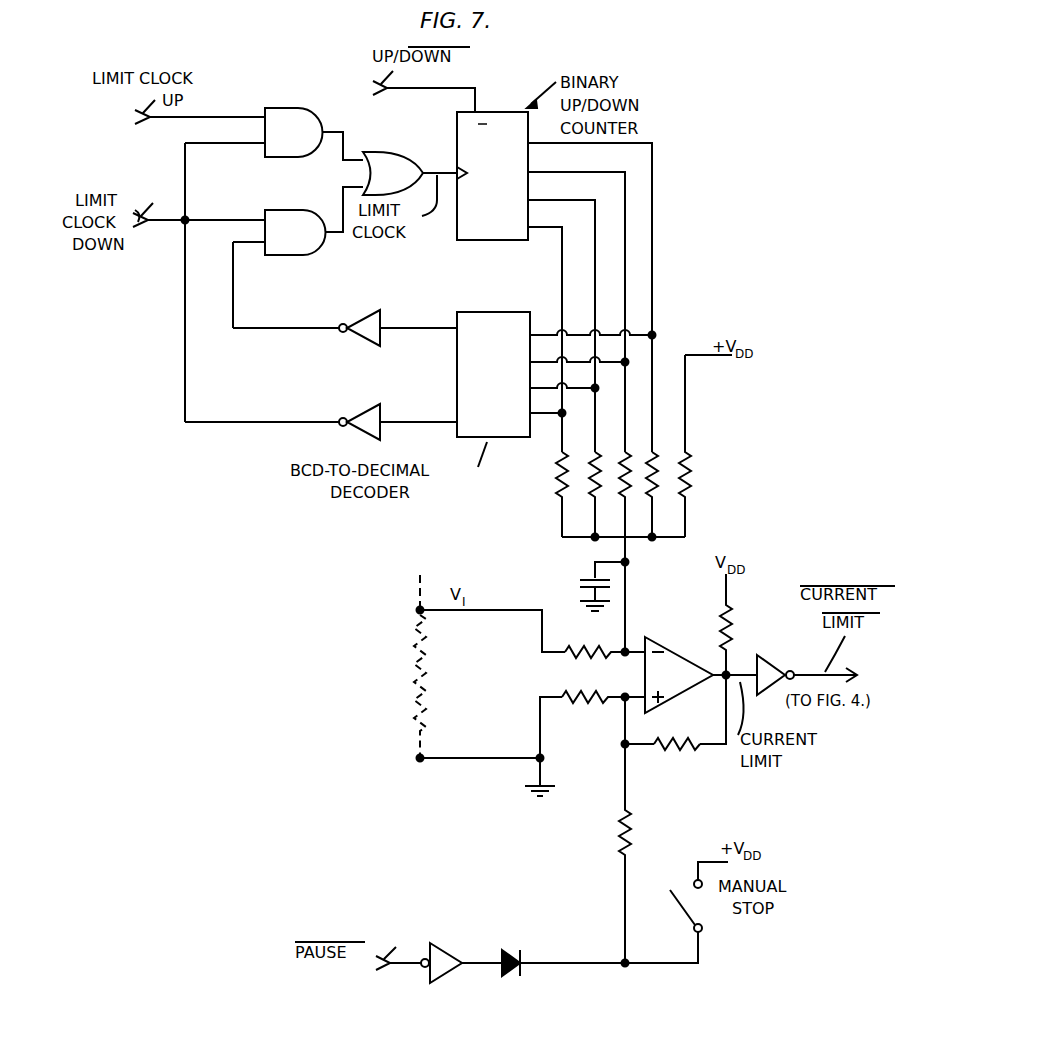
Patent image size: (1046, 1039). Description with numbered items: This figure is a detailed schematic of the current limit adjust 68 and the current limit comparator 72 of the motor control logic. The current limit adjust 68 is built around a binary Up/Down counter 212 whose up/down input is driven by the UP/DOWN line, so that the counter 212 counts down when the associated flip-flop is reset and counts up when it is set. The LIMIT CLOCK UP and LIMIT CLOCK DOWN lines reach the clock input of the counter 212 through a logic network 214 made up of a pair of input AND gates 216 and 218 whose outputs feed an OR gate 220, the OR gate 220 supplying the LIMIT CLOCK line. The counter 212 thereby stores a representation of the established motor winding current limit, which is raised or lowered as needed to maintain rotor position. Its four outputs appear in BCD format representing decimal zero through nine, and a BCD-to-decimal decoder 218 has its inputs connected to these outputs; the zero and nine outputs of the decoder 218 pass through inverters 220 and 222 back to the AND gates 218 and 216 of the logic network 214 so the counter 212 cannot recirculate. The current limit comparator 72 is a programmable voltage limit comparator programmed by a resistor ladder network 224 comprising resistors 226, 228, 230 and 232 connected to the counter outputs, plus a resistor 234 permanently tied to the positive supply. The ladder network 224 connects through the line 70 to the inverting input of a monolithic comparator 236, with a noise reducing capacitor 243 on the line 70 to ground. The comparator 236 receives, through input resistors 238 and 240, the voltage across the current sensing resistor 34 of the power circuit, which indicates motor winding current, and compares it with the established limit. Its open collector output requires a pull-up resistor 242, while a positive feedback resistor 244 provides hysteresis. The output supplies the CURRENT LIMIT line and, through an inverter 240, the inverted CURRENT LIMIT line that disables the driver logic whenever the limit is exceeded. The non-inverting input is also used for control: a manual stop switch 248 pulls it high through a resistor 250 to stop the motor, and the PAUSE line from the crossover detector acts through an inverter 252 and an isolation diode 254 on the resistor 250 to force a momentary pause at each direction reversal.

The logic network 214 is at (357, 242).
The input AND gate 216 is at (310, 110).
The input AND gate / BCD-to-decimal decoder 218 is at (310, 212).
The OR gate / inverter 220 is at (408, 152).
The inverter 222 is at (367, 406).
The binary Up/Down counter 212 is at (507, 111).
The current limit adjust 68 is at (628, 46).
The resistor ladder network 224 is at (640, 448).
The resistor 226 is at (556, 455).
The resistor 228 is at (585, 485).
The resistor 230 is at (627, 472).
The resistor 232 is at (650, 458).
The resistor 234 is at (690, 490).
The current limit comparator 72 is at (803, 460).
The line 70 is at (630, 595).
The noise reducing capacitor 243 is at (590, 577).
The current sensing resistor 34 is at (412, 666).
The input resistor 238 is at (589, 629).
The input resistor / inverter 240 is at (566, 692).
The comparator 236 is at (683, 646).
The output pull-up resistor 242 is at (737, 641).
The positive feedback resistor 244 is at (663, 752).
The resistor 250 is at (637, 839).
The inverter 252 is at (443, 947).
The isolation diode 254 is at (512, 950).
The manual stop switch 248 is at (702, 921).